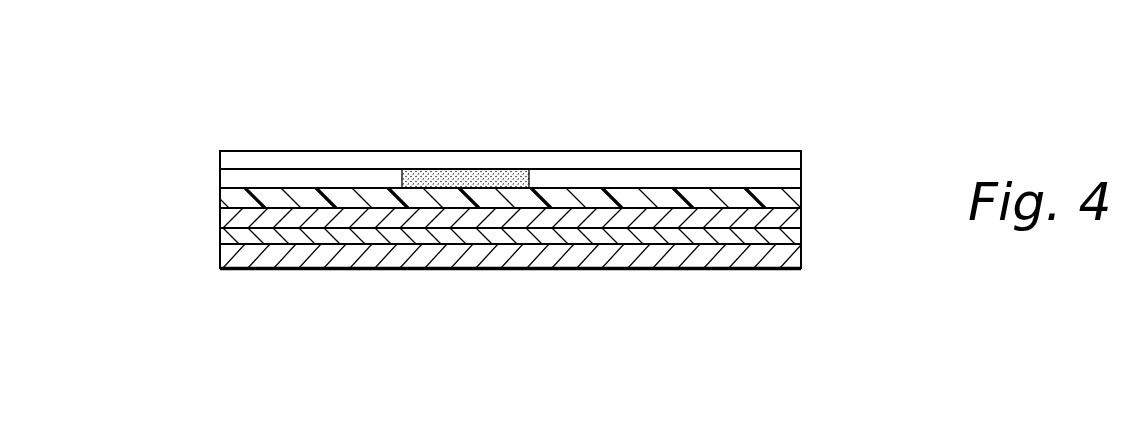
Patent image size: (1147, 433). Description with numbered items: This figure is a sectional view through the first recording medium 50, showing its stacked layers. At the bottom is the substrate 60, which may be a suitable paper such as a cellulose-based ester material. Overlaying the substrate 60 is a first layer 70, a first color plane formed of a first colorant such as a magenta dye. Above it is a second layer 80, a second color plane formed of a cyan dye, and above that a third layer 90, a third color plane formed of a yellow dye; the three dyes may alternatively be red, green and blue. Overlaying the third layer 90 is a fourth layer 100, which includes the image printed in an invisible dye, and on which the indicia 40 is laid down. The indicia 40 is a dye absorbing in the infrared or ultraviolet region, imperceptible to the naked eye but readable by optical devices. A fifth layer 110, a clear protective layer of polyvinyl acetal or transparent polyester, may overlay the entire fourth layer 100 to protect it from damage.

The indicia 40 is at (491, 186).
The first recording medium 50 is at (800, 217).
The substrate 60 is at (220, 260).
The first layer 70 is at (220, 235).
The second layer 80 is at (220, 218).
The third layer 90 is at (220, 198).
The fourth layer 100 is at (220, 178).
The fifth layer 110 is at (270, 152).